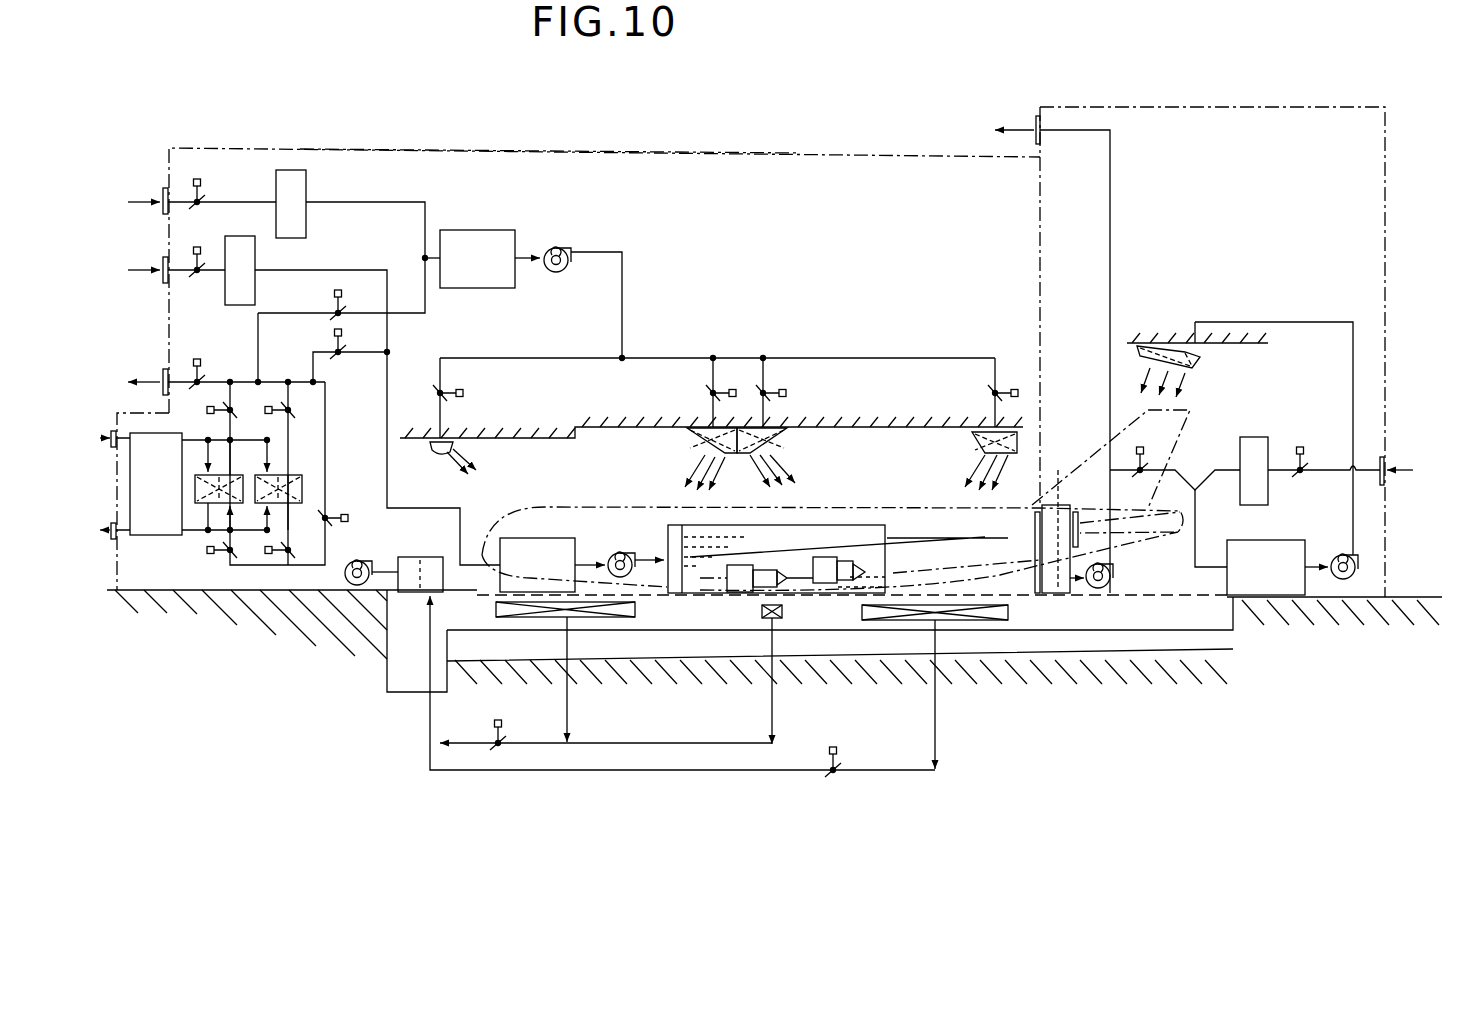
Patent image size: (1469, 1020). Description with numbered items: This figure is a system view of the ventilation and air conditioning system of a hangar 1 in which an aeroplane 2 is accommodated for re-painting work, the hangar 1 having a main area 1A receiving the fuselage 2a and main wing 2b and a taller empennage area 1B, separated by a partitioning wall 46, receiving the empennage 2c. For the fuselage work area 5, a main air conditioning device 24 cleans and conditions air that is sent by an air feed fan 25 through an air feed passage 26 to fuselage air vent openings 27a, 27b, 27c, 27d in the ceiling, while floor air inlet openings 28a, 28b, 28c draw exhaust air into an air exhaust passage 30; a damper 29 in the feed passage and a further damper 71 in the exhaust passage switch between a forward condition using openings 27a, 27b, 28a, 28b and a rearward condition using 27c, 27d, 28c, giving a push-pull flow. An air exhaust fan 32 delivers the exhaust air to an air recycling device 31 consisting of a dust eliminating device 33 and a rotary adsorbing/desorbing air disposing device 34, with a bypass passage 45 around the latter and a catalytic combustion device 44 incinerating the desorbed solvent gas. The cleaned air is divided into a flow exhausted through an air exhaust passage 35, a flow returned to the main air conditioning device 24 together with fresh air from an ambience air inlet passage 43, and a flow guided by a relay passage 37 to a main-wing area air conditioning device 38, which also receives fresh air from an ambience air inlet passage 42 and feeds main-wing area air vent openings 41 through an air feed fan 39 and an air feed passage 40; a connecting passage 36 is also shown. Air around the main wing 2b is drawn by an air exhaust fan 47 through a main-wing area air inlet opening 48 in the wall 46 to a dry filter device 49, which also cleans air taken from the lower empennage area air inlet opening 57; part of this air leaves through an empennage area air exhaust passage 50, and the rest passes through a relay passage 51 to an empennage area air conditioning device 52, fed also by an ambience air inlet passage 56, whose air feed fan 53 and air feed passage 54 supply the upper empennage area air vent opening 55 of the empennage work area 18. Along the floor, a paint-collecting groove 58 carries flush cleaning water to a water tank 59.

The hangar 1 is at (453, 145).
The main area 1A is at (612, 148).
The empennage area 1B is at (1153, 107).
The aeroplane 2 is at (865, 508).
The fuselage 2a is at (890, 512).
The main wing 2b is at (945, 548).
The empennage 2c is at (1097, 452).
The fuselage work area 5 is at (711, 446).
The empennage work area 18 is at (1215, 360).
The main air conditioning device 24 is at (469, 259).
The air feed fan 25 is at (556, 247).
The air feed passage 26 is at (622, 316).
The fuselage air vent opening 27a is at (445, 460).
The fuselage air vent opening 27b is at (688, 440).
The fuselage air vent opening 27c is at (786, 443).
The fuselage air vent opening 27d is at (969, 444).
The floor air inlet opening 28a is at (636, 612).
The floor air inlet opening 28b is at (784, 612).
The floor air inlet opening 28c is at (1010, 612).
The damper 29 is at (467, 393).
The air exhaust passage 30 is at (430, 726).
The air recycling device 31 is at (233, 645).
The air exhaust fan 32 is at (357, 560).
The dust eliminating device 33 is at (398, 582).
The rotary adsorbing/desorbing type air disposing device 34 is at (266, 505).
The air exhaust passage 35 is at (183, 377).
The duct 36 is at (258, 334).
The relay passage 37 is at (355, 356).
The main-wing area air conditioning device 38 is at (518, 538).
The air feed fan 39 is at (610, 553).
The air feed passage 40 is at (647, 558).
The main-wing area air vent openings 41 is at (752, 537).
The ambience air inlet passage 42 is at (180, 263).
The ambience air inlet passage 43 is at (180, 200).
The catalytic combustion device 44 is at (141, 485).
The bypass passage 45 is at (327, 457).
The partitioning wall 46 is at (1038, 280).
The air exhaust fan 47 is at (1117, 571).
The main-wing area air inlet opening 48 is at (1036, 527).
The dry filter device 49 is at (1059, 513).
The empennage area air exhaust passage 50 is at (1110, 255).
The relay passage 51 is at (1195, 482).
The empennage area air conditioning device 52 is at (1266, 567).
The air feed fan 53 is at (1338, 556).
The air feed passage 54 is at (1305, 322).
The empennage area air vent opening 55 is at (1197, 371).
The ambience air inlet passage 56 is at (1322, 470).
The empennage area air inlet opening 57 is at (1078, 517).
The paint-collecting groove 58 is at (1037, 649).
The water tank 59 is at (387, 686).
The damper 71 is at (502, 723).